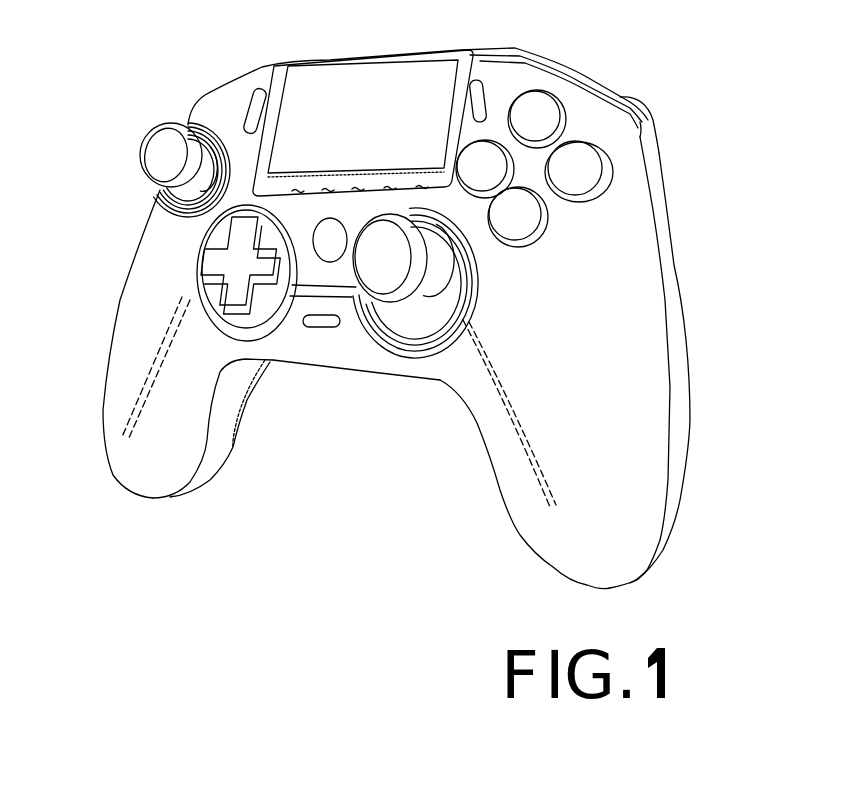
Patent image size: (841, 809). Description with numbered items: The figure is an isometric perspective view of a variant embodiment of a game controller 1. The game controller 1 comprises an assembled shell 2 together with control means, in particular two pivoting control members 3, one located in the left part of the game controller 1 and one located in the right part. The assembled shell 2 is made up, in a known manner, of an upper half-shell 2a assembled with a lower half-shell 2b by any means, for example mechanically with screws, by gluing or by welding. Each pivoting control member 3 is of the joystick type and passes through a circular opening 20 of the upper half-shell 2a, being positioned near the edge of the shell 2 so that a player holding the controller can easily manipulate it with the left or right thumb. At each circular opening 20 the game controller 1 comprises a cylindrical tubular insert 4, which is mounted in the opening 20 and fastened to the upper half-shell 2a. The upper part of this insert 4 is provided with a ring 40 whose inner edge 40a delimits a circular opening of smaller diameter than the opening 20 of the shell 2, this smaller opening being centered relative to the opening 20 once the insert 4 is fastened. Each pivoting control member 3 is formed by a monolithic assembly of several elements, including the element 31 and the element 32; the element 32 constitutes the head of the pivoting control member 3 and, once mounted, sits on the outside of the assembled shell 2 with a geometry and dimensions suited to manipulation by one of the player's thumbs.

The game controller 1 is at (381, 277).
The assembled shell 2 is at (607, 363).
The upper half-shell 2a is at (655, 478).
The lower half-shell 2b is at (690, 420).
The pivoting control member 3 is at (232, 272).
The head 32 is at (147, 152).
The cylindrical tubular insert 4 is at (415, 340).
The element of the pivoting control member 31 is at (450, 290).
The ring 40 is at (528, 345).
The inner edge 40a is at (397, 330).
The circular opening 20 is at (430, 302).